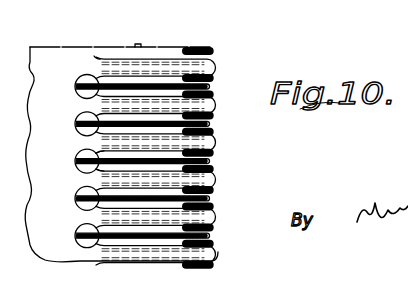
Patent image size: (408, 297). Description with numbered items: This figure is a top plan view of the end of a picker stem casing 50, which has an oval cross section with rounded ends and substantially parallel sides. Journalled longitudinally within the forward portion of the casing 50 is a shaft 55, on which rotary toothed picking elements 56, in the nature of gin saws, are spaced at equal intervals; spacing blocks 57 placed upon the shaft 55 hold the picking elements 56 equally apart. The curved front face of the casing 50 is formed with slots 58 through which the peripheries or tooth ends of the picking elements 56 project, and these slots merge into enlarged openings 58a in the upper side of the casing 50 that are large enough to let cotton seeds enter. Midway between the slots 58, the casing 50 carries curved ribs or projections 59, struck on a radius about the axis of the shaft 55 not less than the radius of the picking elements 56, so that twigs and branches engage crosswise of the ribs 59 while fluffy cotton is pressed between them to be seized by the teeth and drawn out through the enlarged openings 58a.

The casing 50 is at (115, 52).
The shaft 55 is at (140, 46).
The toothed picking element 56 is at (213, 165).
The spacing block 57 is at (118, 88).
The slot 58 is at (211, 90).
The enlarged opening 58a is at (72, 132).
The curved rib 59 is at (216, 64).